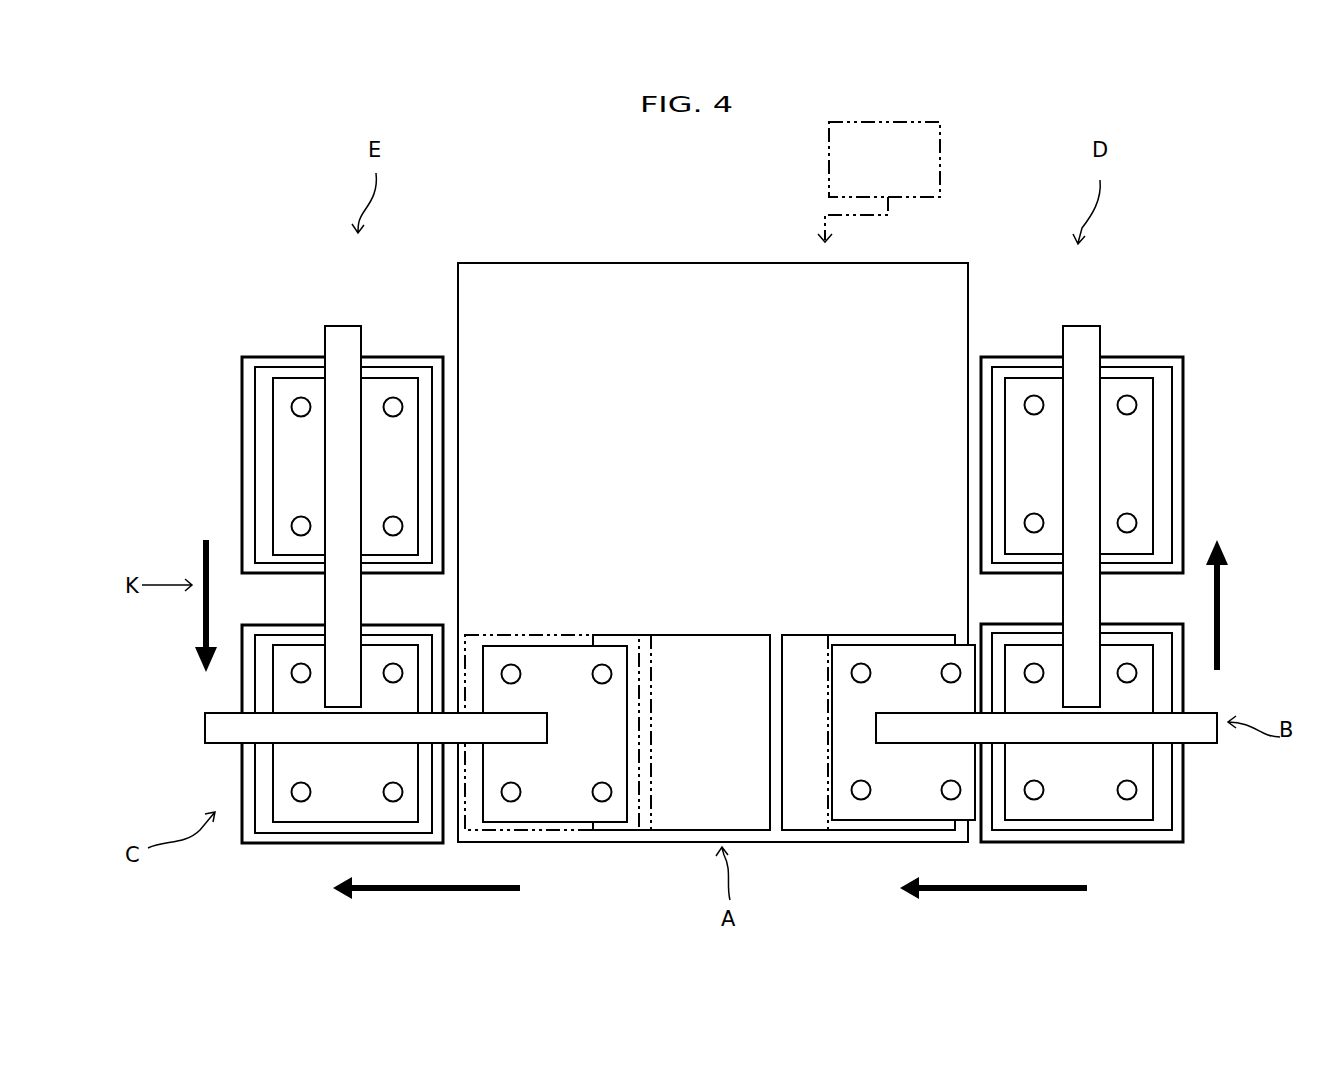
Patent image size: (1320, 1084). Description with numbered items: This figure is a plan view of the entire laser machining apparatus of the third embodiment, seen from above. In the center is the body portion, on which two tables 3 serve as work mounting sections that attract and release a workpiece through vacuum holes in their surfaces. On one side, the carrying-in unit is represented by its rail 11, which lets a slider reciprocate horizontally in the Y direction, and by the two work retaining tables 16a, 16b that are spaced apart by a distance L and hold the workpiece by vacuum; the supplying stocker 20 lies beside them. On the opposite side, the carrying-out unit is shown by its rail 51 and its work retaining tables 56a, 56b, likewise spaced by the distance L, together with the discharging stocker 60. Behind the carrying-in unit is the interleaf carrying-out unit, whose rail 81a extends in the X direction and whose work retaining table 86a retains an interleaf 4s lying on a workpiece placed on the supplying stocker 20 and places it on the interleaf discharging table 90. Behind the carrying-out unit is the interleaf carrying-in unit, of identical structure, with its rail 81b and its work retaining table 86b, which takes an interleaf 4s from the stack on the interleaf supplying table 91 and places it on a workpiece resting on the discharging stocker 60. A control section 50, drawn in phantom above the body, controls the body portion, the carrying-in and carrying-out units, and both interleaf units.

The table 3 is at (715, 645).
The interleaf 4s is at (630, 420).
The rail 11 is at (1200, 718).
The work retaining table 16a is at (1118, 820).
The work retaining table 16b is at (878, 822).
The supplying stocker 20 is at (1117, 775).
The control section 50 is at (942, 150).
The rail 51 is at (215, 722).
The work retaining table 56a is at (258, 768).
The work retaining table 56b is at (562, 822).
The discharging stocker 60 is at (300, 777).
The rail 81a is at (1080, 325).
The rail 81b is at (343, 326).
The work retaining table 86a is at (1150, 390).
The work retaining table 86b is at (390, 380).
The interleaf discharging table 90 is at (1123, 453).
The interleaf supplying table 91 is at (595, 425).